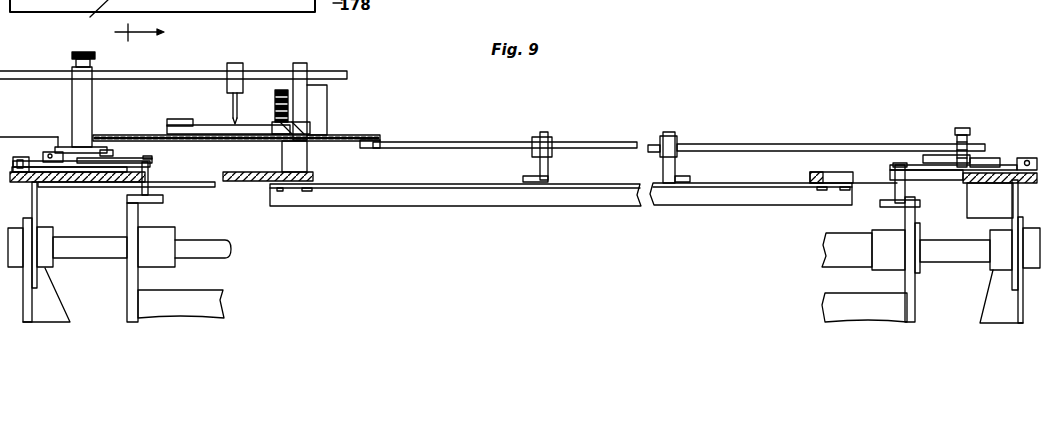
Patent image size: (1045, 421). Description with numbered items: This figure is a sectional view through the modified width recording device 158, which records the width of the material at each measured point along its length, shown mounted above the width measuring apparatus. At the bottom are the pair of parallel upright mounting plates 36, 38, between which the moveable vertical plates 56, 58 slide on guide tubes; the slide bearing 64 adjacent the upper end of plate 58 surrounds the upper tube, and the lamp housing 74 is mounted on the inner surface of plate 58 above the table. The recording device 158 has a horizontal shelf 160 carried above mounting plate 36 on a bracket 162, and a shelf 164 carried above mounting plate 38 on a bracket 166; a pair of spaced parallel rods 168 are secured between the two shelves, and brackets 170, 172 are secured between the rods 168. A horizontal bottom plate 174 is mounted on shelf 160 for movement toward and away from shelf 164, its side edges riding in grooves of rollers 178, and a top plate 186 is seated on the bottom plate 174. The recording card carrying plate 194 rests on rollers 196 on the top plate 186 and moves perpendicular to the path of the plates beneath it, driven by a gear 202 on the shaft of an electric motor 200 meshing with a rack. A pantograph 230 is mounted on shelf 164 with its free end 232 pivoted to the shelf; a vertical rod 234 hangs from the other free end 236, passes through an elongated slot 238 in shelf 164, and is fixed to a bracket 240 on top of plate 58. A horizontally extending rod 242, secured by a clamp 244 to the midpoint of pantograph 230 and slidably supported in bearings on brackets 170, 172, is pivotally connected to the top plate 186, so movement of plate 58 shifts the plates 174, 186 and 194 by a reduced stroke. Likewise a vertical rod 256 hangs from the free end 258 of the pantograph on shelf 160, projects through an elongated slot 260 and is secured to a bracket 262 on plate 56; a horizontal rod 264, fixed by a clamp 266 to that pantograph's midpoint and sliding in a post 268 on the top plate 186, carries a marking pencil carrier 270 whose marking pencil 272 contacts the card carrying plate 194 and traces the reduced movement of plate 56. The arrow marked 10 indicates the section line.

The section line 10 is at (148, 33).
The mounting plate 36 is at (27, 300).
The mounting plate 38 is at (1020, 308).
The vertical plate 56 is at (135, 305).
The vertical plate 58 is at (915, 290).
The slide bearing 64 is at (880, 250).
The housing 74 is at (823, 306).
The recording device 158 is at (614, 128).
The shelf 160 is at (63, 182).
The bracket 162 is at (38, 218).
The shelf 164 is at (995, 186).
The bracket 166 is at (1012, 217).
The rods 168 is at (463, 207).
The bracket 170 is at (671, 131).
The bracket 172 is at (543, 131).
The bottom plate 174 is at (215, 141).
The rollers 178 is at (307, 157).
The top plate 186 is at (146, 135).
The recording card carrying plate 194 is at (213, 125).
The rollers 196 is at (173, 120).
The electric motor 200 is at (323, 116).
The gear 202 is at (280, 90).
The pantograph 230 is at (988, 158).
The free end 232 is at (1026, 157).
The vertical rod 234 is at (906, 186).
The free end 236 is at (897, 163).
The elongated slot 238 is at (832, 173).
The bracket 240 is at (905, 213).
The horizontally extending rod 242 is at (745, 143).
The clamp 244 is at (955, 140).
The vertical rod 256 is at (150, 190).
The free end 258 is at (152, 161).
The elongated slot 260 is at (214, 181).
The bracket 262 is at (140, 223).
The horizontal rod 264 is at (190, 71).
The clamp 266 is at (72, 100).
The post 268 is at (304, 63).
The marking pencil carrier 270 is at (239, 63).
The marking pencil 272 is at (237, 103).